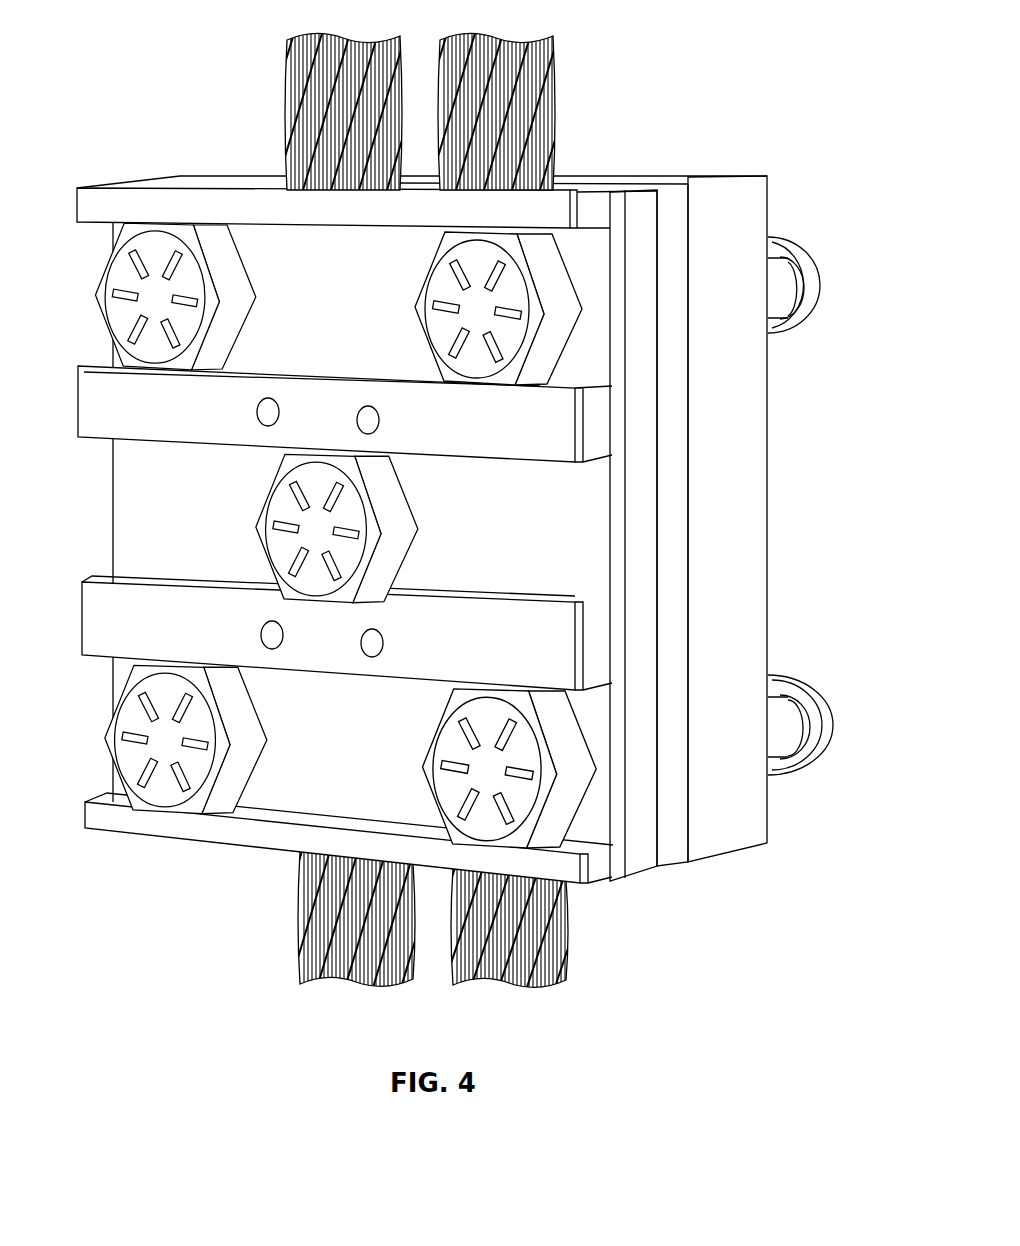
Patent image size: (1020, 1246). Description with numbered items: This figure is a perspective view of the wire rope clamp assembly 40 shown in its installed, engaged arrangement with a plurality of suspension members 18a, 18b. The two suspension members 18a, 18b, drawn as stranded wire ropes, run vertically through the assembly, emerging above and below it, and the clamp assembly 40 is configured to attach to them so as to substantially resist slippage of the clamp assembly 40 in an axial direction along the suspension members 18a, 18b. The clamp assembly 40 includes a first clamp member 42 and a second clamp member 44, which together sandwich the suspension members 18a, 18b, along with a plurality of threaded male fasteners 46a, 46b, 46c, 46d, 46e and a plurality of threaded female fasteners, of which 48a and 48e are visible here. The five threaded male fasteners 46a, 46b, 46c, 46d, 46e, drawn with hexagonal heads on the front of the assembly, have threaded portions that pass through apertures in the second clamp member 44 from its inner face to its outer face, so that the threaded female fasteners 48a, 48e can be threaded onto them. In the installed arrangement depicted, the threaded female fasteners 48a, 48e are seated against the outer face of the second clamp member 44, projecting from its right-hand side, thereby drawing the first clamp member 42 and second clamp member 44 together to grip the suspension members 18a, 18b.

The clamp assembly 40 is at (452, 533).
The first clamp member 42 is at (658, 858).
The second clamp member 44 is at (765, 488).
The threaded male fastener 46a is at (533, 247).
The threaded male fastener 46b is at (100, 294).
The threaded male fastener 46c is at (265, 535).
The threaded male fastener 46d is at (170, 728).
The threaded male fastener 46e is at (545, 838).
The threaded female fastener 48a is at (800, 262).
The threaded female fastener 48e is at (808, 702).
The suspension member 18a is at (300, 935).
The suspension member 18b is at (570, 940).